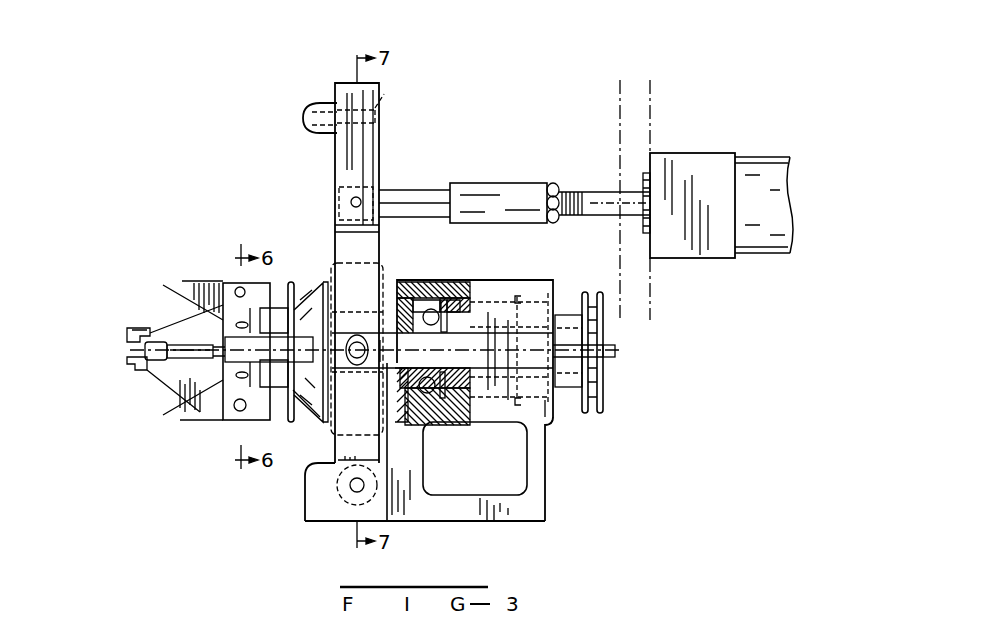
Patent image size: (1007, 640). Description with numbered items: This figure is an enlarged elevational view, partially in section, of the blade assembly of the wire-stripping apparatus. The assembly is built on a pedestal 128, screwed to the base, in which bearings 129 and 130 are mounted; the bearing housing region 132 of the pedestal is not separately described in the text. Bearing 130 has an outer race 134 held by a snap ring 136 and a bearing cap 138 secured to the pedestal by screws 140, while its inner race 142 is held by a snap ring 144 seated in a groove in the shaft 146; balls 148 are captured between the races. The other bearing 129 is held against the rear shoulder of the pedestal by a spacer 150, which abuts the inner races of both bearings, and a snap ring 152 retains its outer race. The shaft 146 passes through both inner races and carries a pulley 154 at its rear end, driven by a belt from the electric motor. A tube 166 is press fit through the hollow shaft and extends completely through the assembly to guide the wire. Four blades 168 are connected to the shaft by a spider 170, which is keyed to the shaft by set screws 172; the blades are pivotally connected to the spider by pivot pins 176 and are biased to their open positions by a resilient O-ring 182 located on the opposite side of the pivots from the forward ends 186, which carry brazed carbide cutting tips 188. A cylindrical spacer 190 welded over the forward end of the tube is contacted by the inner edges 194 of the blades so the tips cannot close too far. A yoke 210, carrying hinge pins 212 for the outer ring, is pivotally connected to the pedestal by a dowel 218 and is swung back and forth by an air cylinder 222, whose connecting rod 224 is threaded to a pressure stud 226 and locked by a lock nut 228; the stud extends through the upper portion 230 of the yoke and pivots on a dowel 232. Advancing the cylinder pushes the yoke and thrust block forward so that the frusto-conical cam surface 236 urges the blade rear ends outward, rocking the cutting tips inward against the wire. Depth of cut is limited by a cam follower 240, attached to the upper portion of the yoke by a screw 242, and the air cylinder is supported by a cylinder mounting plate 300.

The pedestal 128 is at (538, 497).
The bearing 129 is at (560, 404).
The bearing 130 is at (466, 325).
The bearing housing 132 is at (512, 300).
The outer race 134 is at (452, 305).
The snap ring 136 is at (470, 312).
The bearing cap 138 is at (397, 297).
The screws 140 is at (420, 283).
The inner race 142 is at (465, 400).
The snap ring 144 is at (390, 430).
The shaft 146 is at (538, 295).
The balls 148 is at (548, 304).
The spacer 150 is at (478, 400).
The snap ring 152 is at (540, 428).
The pulley 154 is at (605, 386).
The tube 166 is at (183, 360).
The blades 168 is at (183, 290).
The spider 170 is at (243, 283).
The set screws 172 is at (181, 301).
The pivot pins 176 is at (236, 290).
The O-ring 182 is at (291, 282).
The forward ends 186 is at (143, 330).
The cutting tips 188 is at (127, 337).
The cylindrical spacer 190 is at (160, 331).
The inner edges 194 is at (145, 348).
The yoke 210 is at (353, 310).
The hinge pins 212 is at (357, 360).
The dowel 218 is at (350, 488).
The air cylinder 222 is at (695, 153).
The connecting rod 224 is at (593, 192).
The pressure stud 226 is at (465, 184).
The lock nut 228 is at (553, 184).
The upper portion 230 is at (379, 144).
The dowel 232 is at (351, 198).
The frusto-conical cam surface 236 is at (310, 392).
The cam follower 240 is at (327, 105).
The screw 242 is at (381, 100).
The cylinder mounting plate 300 is at (651, 97).